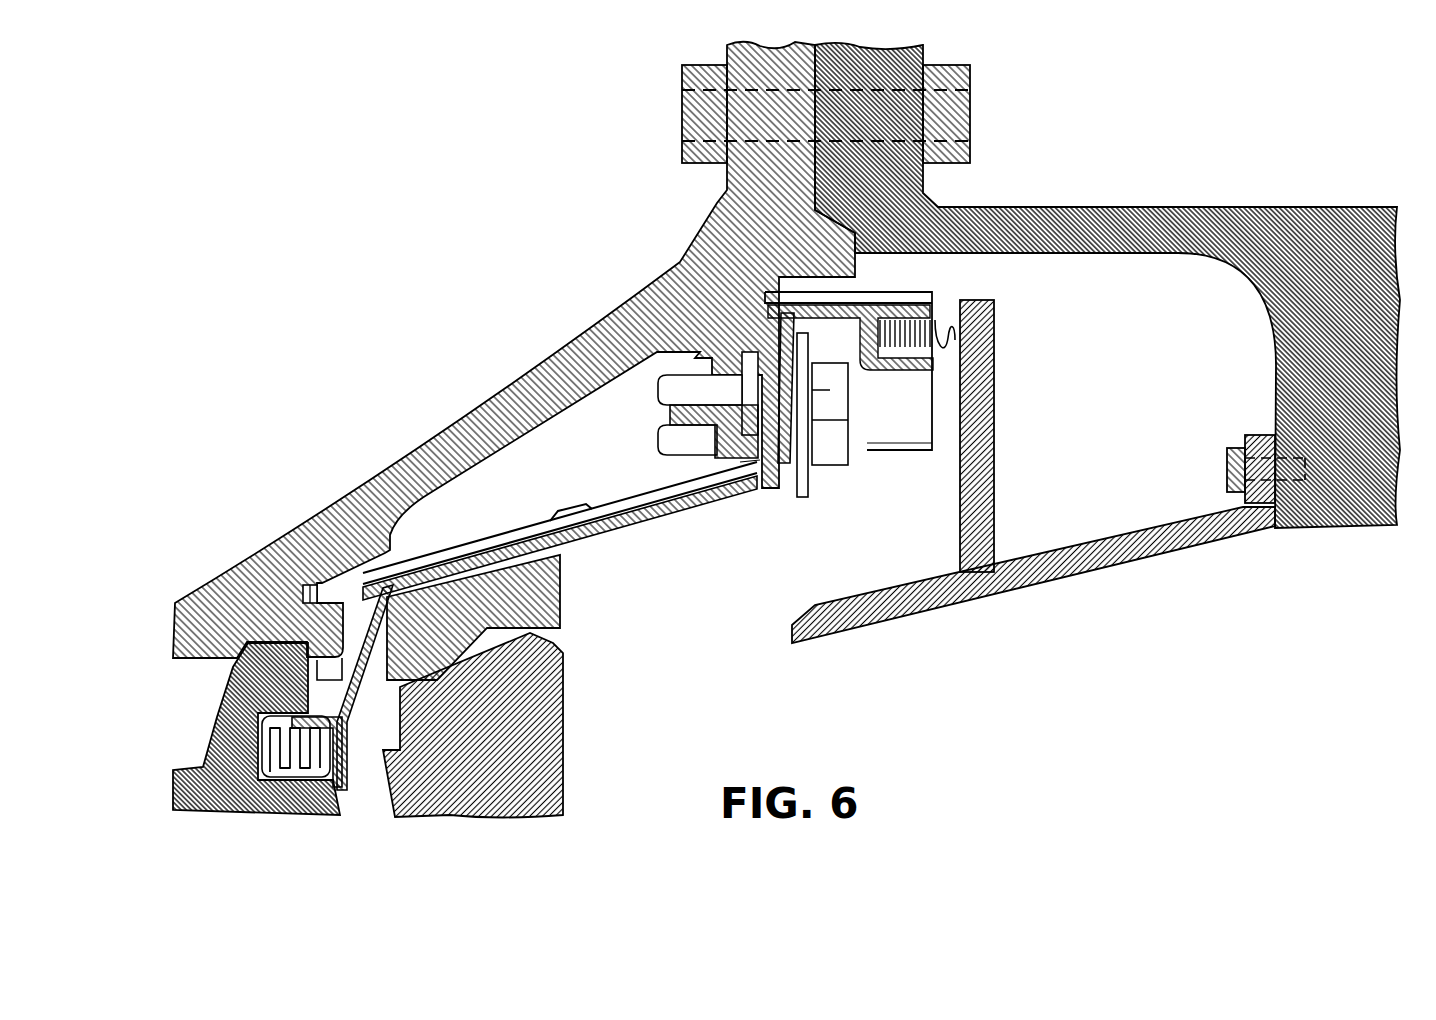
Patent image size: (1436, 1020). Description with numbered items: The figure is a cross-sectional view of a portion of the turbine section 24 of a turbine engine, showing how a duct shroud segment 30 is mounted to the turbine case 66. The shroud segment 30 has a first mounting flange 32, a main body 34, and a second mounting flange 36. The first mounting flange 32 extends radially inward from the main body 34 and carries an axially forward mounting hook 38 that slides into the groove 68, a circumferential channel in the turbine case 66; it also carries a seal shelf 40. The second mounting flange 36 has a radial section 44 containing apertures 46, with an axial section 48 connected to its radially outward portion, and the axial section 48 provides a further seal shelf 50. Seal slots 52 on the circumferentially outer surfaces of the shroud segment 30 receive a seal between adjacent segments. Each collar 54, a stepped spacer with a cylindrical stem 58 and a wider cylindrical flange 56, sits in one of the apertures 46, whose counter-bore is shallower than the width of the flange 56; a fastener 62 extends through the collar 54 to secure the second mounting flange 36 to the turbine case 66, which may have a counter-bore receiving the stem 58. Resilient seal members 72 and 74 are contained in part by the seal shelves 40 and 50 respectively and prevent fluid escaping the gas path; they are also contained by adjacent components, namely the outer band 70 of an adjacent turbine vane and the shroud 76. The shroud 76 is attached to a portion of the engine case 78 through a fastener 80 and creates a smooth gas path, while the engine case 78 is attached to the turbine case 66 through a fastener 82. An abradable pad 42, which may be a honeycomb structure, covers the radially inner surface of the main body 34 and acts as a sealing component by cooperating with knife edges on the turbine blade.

The turbine section 24 is at (510, 207).
The duct shroud segment 30 is at (755, 545).
The first mounting flange 32 is at (368, 722).
The main body 34 is at (670, 572).
The second mounting flange 36 is at (883, 468).
The mounting hook 38 is at (330, 585).
The seal shelf 40 is at (318, 775).
The abradable pad 42 is at (540, 610).
The radial section 44 is at (757, 335).
The apertures 46 is at (757, 350).
The axial section 48 is at (907, 313).
The seal shelf 50 is at (917, 355).
The seal slots 52 is at (775, 470).
The collar 54 is at (802, 473).
The flange 56 is at (803, 347).
The stem 58 is at (745, 365).
The fastener 62 is at (835, 408).
The turbine case 66 is at (418, 475).
The groove 68 is at (303, 590).
The outer band 70 is at (230, 727).
The resilient seal member 72 is at (267, 747).
The resilient seal member 74 is at (952, 325).
The shroud 76 is at (1073, 565).
The engine case 78 is at (1063, 220).
The fastener 80 is at (1227, 470).
The fastener 82 is at (682, 100).